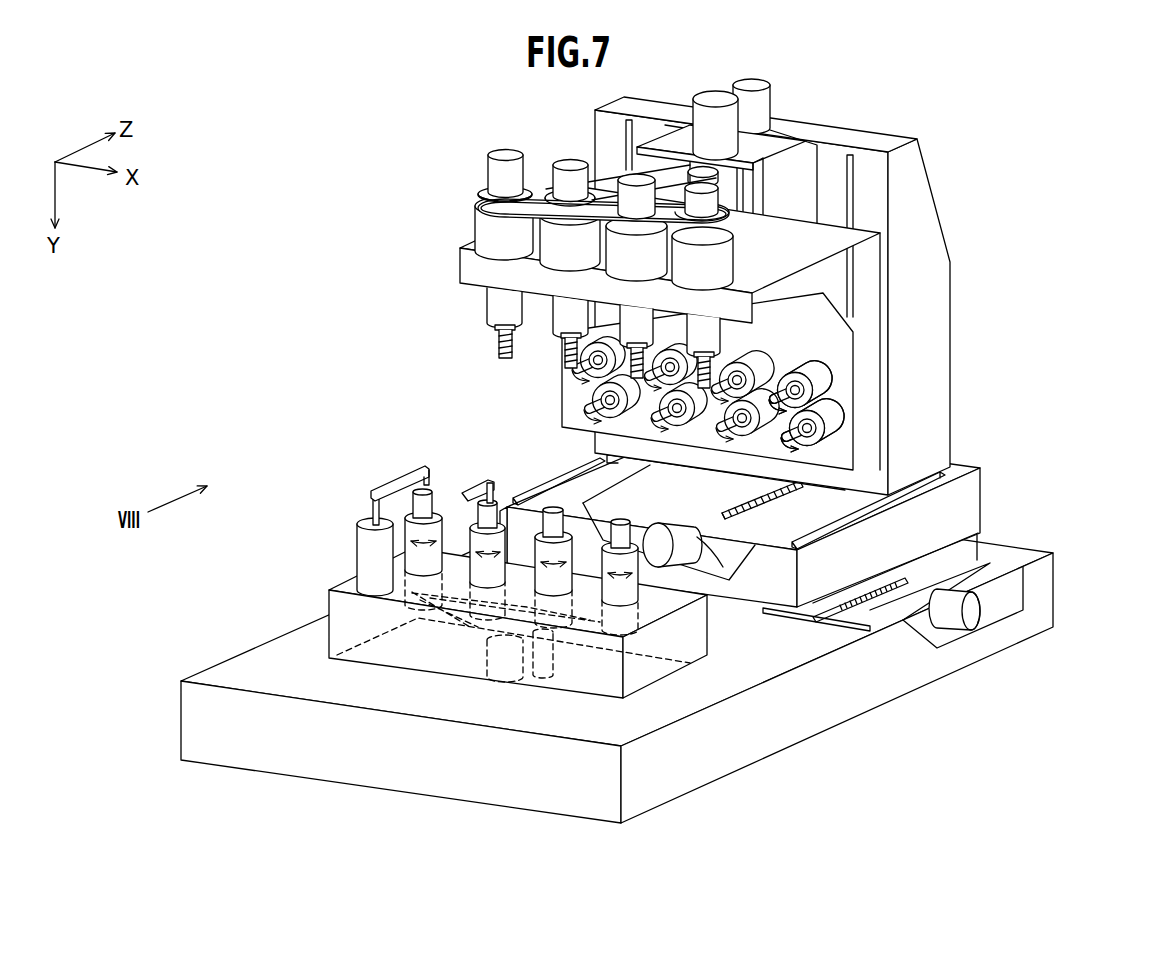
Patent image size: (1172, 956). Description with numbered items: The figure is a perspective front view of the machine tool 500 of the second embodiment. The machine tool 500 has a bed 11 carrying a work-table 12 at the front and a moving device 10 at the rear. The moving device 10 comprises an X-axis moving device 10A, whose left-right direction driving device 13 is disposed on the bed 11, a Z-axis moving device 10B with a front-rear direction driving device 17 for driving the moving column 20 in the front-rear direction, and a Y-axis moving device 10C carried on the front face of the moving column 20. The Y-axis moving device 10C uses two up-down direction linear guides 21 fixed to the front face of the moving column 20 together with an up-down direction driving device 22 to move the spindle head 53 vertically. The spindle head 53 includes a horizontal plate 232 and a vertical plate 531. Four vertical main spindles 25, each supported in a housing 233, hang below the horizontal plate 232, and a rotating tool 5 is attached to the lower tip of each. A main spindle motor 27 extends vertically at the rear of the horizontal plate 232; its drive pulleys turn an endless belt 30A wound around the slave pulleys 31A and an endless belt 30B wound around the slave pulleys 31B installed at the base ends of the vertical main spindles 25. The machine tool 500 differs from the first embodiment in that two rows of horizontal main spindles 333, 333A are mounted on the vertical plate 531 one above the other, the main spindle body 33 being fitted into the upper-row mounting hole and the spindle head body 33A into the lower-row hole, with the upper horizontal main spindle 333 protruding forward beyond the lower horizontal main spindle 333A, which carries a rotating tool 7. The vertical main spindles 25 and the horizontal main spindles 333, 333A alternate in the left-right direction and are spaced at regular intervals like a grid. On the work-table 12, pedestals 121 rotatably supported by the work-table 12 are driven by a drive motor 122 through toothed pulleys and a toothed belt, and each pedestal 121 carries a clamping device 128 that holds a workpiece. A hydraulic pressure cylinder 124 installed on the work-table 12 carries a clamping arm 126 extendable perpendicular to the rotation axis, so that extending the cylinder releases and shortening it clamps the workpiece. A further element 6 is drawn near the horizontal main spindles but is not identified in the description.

The machine tool 500 is at (1002, 107).
The main spindle motor 27 is at (703, 101).
The up-down direction driving device 22 is at (770, 103).
The slave pulley 31B is at (485, 185).
The slave pulley 31A is at (550, 180).
The endless belt 30B is at (473, 198).
The housing 233 is at (473, 228).
The spindle head 53 is at (623, 216).
The vertical main spindle 25 is at (467, 328).
The tool 5 is at (498, 345).
The endless belt 30A is at (735, 233).
The up-down direction linear guide 21 is at (855, 180).
The horizontal plate 232 is at (862, 240).
The moving column 20 is at (828, 296).
The horizontal main spindle 333 is at (786, 360).
The main spindle body 33 is at (828, 377).
The vertical plate 531 is at (797, 367).
The spindle head body 33A is at (832, 418).
The horizontal main spindle 333A is at (843, 447).
The Y-axis moving device 10C is at (868, 477).
The Z-axis moving device 10B is at (972, 458).
The X-axis moving device 10A is at (1002, 532).
The moving device 10 is at (820, 542).
The front-rear direction driving device 17 is at (730, 578).
The left-right direction driving device 13 is at (976, 612).
The bed 11 is at (768, 729).
The work-table 12 is at (519, 616).
The drive motor 122 is at (527, 665).
The hydraulic pressure cylinder 124 is at (357, 573).
The clamping arm 126 is at (373, 480).
The clamping device 128 is at (443, 520).
The pedestal 121 is at (455, 530).
The roller 6 is at (592, 372).
The tool 7 is at (563, 425).